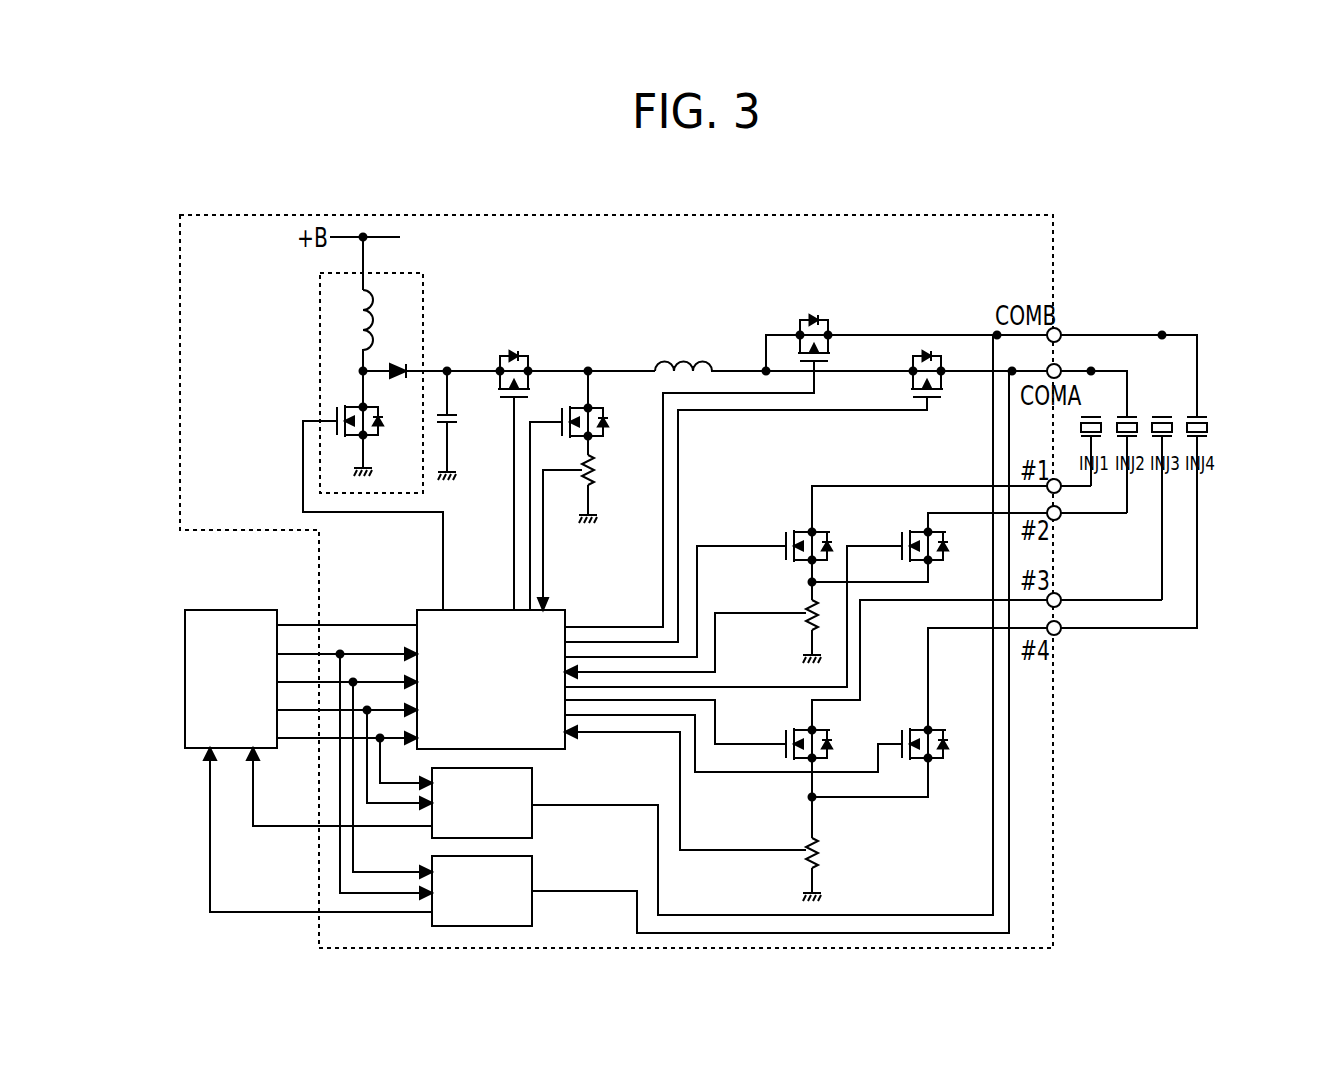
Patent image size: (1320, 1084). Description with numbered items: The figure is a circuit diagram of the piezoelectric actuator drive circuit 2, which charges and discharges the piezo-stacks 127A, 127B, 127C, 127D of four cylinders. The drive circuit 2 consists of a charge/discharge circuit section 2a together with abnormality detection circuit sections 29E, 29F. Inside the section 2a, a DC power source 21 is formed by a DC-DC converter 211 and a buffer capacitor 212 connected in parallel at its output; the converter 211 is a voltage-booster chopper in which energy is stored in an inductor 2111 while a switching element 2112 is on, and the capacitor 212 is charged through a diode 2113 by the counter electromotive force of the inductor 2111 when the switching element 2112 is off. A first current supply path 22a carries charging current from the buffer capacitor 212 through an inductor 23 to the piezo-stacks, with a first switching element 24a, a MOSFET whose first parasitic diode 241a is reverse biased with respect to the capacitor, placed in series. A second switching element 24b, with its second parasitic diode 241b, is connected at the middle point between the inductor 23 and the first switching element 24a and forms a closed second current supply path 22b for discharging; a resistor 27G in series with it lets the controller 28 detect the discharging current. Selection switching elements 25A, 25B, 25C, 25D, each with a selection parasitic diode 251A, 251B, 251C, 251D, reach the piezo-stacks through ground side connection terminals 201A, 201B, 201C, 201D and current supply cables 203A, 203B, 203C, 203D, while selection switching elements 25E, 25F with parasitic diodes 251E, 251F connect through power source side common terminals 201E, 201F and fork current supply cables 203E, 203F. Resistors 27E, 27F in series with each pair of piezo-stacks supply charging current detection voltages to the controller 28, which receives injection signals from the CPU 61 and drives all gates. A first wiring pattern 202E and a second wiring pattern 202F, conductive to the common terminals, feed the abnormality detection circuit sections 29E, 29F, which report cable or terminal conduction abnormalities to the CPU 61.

The piezoelectric actuator drive circuit 2 is at (290, 212).
The charge/discharge circuit section 2a is at (500, 220).
The DC power source 21 is at (305, 268).
The DC-DC converter 211 is at (318, 312).
The inductor 2111 is at (352, 328).
The switching element 2112 is at (346, 440).
The diode 2113 is at (390, 372).
The buffer capacitor 212 is at (452, 428).
The CPU 61 is at (213, 610).
The controller 28 is at (420, 610).
The first switching element 24a is at (492, 368).
The first parasitic diode 241a is at (513, 352).
The first current supply path 22a is at (555, 371).
The second switching element 24b is at (576, 407).
The second parasitic diode 241b is at (608, 420).
The inductor 23 is at (686, 365).
The second current supply path 22b is at (598, 440).
The resistor 27G is at (578, 474).
The selection switching element 25F is at (798, 340).
The selection parasitic diode 251F is at (816, 318).
The selection switching element 25E is at (912, 383).
The selection parasitic diode 251E is at (930, 354).
The selection switching element 25A is at (783, 540).
The selection parasitic diode 251A is at (830, 545).
The selection switching element 25B is at (896, 537).
The selection parasitic diode 251B is at (952, 542).
The resistor 27E is at (808, 620).
The selection switching element 25C is at (783, 753).
The selection parasitic diode 251C is at (829, 745).
The selection switching element 25D is at (901, 735).
The selection parasitic diode 251D is at (946, 745).
The resistor 27F is at (807, 855).
The second abnormality detection circuit section 29F is at (535, 785).
The first abnormality detection circuit section 29E is at (535, 873).
The power source side connection terminal 201F is at (1056, 328).
The power source side connection terminal 201E is at (1059, 364).
The fork current supply cable 203F is at (1073, 370).
The fork current supply cable 203E is at (1097, 370).
The piezo-stack 127A is at (1096, 415).
The piezo-stack 127B is at (1131, 415).
The piezo-stack 127C is at (1167, 415).
The piezo-stack 127D is at (1203, 416).
The current supply cable 203A is at (1091, 486).
The current supply cable 203B is at (1127, 512).
The current supply cable 203C is at (1162, 558).
The current supply cable 203D is at (1197, 615).
The ground side connection terminal 201A is at (1062, 493).
The ground side connection terminal 201B is at (1062, 520).
The ground side connection terminal 201C is at (1062, 607).
The ground side connection terminal 201D is at (1062, 635).
The first wiring pattern 202E is at (1010, 848).
The second wiring pattern 202F is at (995, 888).